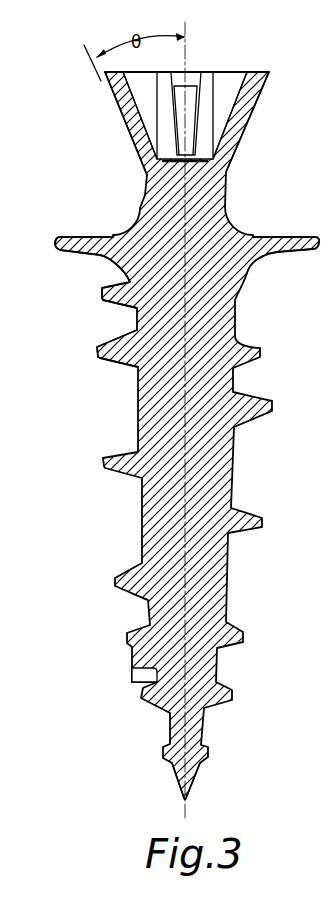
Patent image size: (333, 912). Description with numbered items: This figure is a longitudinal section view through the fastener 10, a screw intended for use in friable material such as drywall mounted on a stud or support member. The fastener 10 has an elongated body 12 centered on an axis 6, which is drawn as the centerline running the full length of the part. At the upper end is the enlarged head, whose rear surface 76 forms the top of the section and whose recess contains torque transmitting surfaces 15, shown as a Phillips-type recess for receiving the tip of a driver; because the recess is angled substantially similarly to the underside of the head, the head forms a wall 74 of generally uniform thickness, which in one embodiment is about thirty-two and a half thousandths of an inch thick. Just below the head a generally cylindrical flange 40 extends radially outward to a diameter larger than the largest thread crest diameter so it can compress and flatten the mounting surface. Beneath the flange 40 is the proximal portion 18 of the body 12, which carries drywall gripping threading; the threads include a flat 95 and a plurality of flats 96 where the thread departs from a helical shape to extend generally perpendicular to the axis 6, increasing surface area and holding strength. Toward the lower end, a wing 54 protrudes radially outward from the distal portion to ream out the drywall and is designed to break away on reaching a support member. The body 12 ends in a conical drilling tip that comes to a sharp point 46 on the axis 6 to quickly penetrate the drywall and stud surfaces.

The axis 6 is at (186, 30).
The rear surface 76 is at (258, 73).
The wall 74 is at (248, 130).
The torque transmitting surfaces 15 is at (143, 121).
The flange 40 is at (57, 240).
The flat 95 is at (100, 292).
The flats 96 is at (97, 348).
The elongated body 12 is at (228, 376).
The wing 54 is at (132, 673).
The point 46 is at (186, 800).
The proximal portion 18 is at (4, 82).
The fastener 10 is at (4, 112).